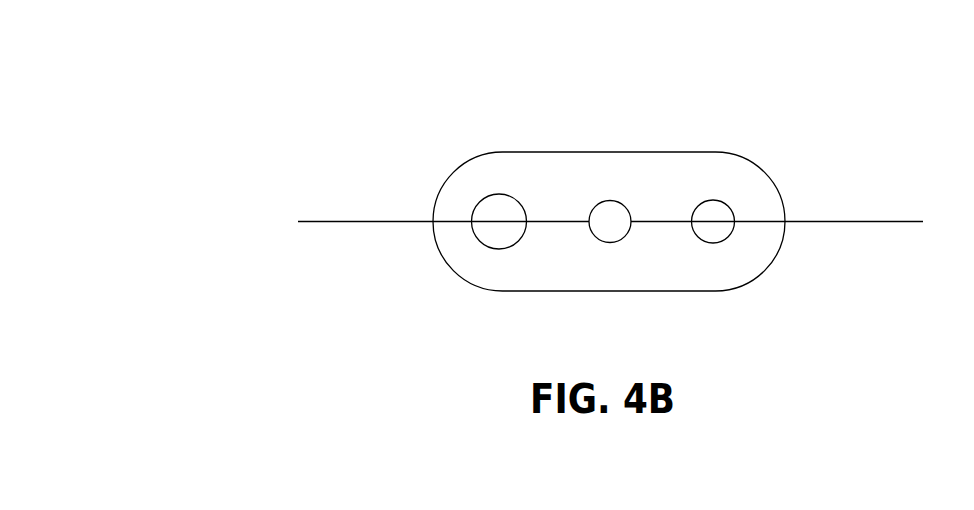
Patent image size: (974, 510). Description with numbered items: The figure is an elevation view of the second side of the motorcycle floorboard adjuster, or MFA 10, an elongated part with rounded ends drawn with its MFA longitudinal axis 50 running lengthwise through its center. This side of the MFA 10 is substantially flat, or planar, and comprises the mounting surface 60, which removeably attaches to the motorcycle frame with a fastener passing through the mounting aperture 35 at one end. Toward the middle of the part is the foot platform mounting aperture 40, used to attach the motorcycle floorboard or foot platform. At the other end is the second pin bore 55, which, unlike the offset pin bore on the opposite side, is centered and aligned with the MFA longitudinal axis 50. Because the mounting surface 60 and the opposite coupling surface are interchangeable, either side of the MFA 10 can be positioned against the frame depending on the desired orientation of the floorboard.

The motorcycle floorboard adjuster (MFA) 10 is at (149, 142).
The mounting aperture 35 is at (499, 194).
The foot platform mounting aperture 40 is at (610, 200).
The MFA longitudinal axis 50 is at (843, 219).
The second pin bore 55 is at (733, 230).
The mounting surface 60 is at (568, 276).